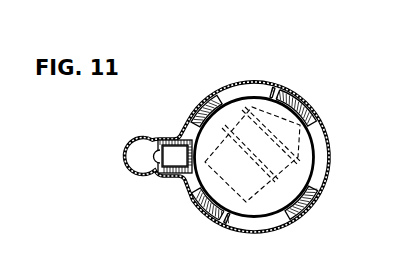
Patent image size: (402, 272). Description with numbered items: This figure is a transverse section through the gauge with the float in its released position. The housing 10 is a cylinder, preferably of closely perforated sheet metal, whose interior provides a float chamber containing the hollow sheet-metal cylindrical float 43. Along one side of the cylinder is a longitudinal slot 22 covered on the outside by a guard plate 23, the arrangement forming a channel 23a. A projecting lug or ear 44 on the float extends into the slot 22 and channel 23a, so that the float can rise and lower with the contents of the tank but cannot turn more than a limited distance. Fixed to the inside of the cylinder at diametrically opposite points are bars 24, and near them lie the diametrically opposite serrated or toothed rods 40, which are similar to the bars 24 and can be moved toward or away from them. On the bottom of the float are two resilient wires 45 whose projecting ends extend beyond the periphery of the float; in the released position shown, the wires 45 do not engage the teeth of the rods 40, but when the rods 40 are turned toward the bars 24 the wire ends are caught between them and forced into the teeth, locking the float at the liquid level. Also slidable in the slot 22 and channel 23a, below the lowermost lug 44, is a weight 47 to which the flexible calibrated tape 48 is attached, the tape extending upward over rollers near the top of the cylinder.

The housing 10 is at (331, 158).
The longitudinal slot 22 is at (160, 136).
The guard plate 23 is at (125, 159).
The channel 23a is at (153, 164).
The bars 24 is at (308, 108).
The serrated or toothed rods 40 is at (208, 95).
The cylindrical float 43 is at (311, 178).
The projecting lugs or ears 44 is at (177, 157).
The resilient wires 45 is at (277, 91).
The weight 47 is at (182, 181).
The flexible calibrated tape 48 is at (160, 143).